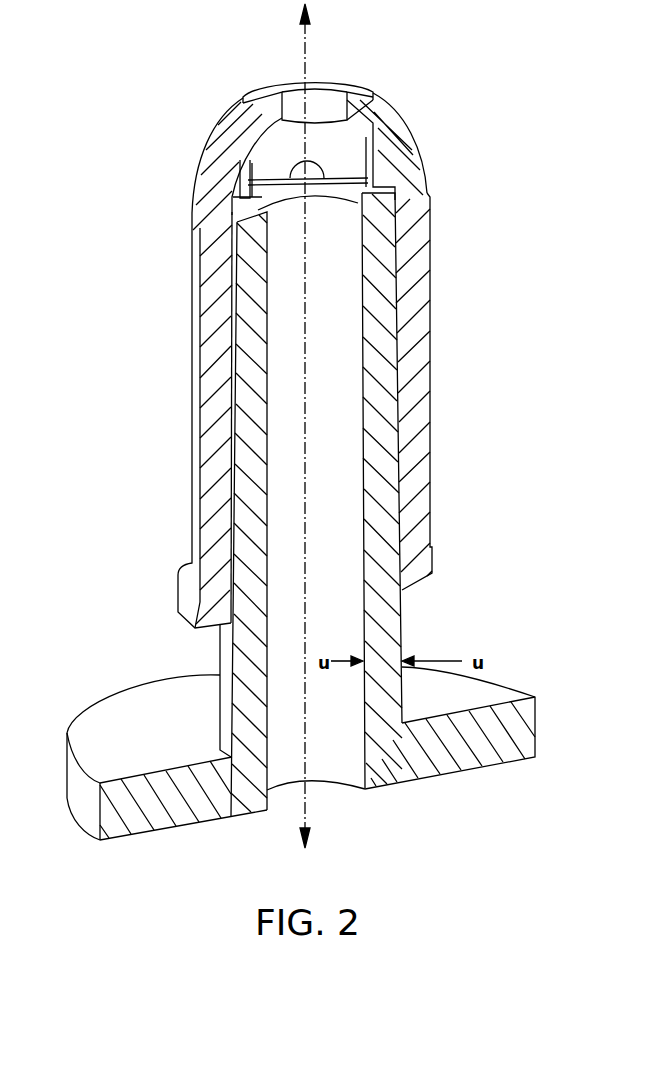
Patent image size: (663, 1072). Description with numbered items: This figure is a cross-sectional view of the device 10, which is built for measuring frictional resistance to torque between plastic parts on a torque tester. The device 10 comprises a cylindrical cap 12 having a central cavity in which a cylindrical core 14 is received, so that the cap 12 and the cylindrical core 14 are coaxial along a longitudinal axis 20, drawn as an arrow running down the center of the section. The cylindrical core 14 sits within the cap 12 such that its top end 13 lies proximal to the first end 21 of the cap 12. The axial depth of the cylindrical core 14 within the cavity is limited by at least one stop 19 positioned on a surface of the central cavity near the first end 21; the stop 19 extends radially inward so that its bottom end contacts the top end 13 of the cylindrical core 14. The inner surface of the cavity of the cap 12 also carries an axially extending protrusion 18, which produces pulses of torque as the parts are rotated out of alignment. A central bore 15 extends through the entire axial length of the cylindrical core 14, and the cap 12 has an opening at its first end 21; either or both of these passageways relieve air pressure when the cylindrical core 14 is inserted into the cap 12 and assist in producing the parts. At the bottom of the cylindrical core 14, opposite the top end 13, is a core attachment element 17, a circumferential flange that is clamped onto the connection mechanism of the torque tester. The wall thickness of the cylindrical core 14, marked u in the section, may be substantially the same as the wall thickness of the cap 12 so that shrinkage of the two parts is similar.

The device 10 is at (160, 42).
The cylindrical cap 12 is at (433, 382).
The top end 13 is at (355, 192).
The cylindrical core 14 is at (393, 624).
The central bore 15 is at (340, 540).
The core attachment element 17 is at (110, 715).
The axially extending protrusion 18 is at (282, 170).
The stop 19 is at (243, 185).
The longitudinal axis 20 is at (312, 67).
The first end 21 is at (350, 88).